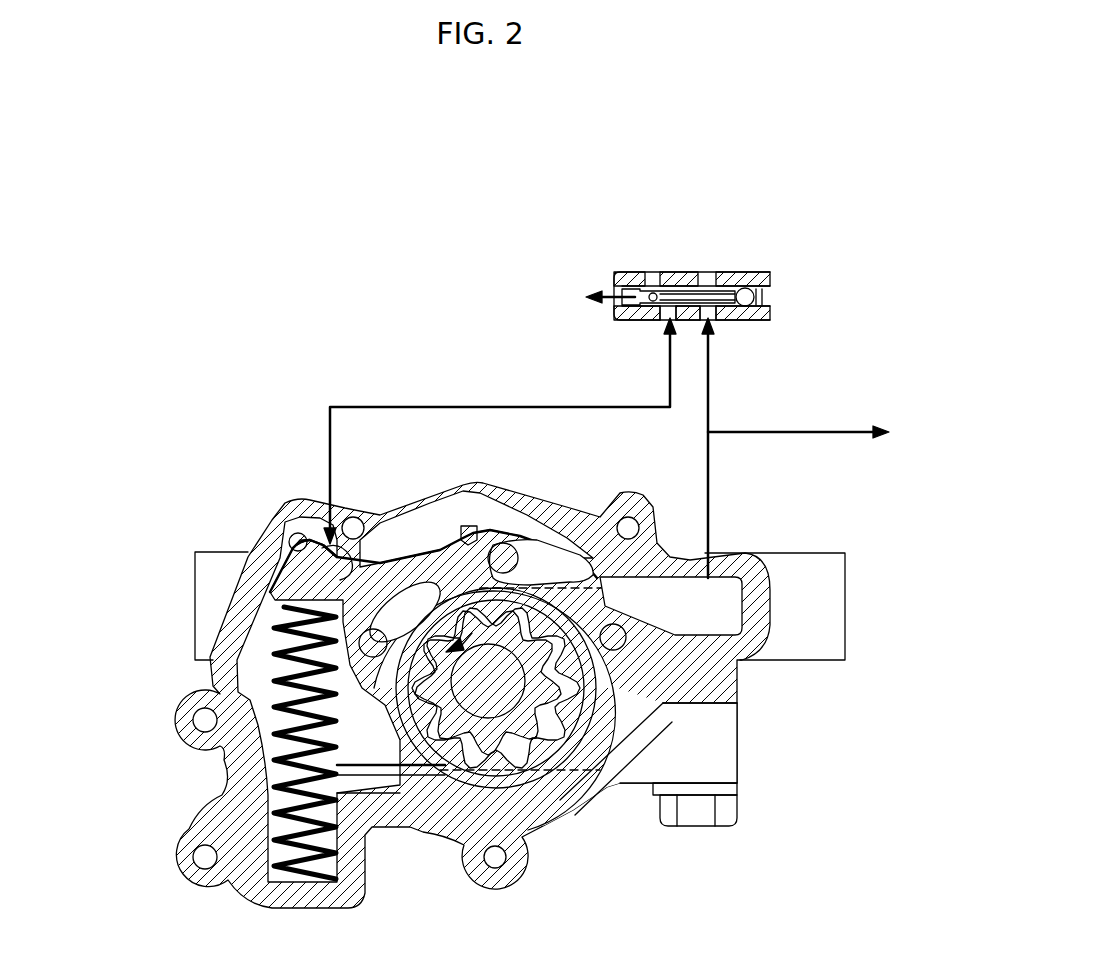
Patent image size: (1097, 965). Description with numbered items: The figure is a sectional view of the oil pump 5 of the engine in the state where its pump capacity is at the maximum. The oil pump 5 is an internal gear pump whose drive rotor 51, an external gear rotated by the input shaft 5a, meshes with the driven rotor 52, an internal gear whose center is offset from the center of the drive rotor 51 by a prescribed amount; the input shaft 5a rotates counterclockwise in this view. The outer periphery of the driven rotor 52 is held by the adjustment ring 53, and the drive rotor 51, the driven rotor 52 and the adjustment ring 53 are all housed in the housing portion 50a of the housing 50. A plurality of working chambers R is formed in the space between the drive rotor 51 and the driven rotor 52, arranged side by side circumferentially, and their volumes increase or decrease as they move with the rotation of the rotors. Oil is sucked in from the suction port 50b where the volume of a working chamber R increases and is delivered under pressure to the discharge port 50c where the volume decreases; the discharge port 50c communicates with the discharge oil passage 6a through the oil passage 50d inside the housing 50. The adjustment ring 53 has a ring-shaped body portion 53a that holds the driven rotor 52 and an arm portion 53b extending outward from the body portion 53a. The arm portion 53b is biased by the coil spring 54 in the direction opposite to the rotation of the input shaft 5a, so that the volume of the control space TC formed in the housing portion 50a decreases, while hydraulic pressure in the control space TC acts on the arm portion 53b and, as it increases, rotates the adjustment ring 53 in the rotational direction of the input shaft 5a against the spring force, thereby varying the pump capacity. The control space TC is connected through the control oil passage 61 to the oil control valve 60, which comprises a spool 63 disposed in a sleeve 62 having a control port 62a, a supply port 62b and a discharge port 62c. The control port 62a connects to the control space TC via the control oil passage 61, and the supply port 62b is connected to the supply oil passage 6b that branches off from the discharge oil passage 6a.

The oil pump 5 is at (235, 421).
The input shaft 5a is at (475, 693).
The discharge oil passage 6a is at (720, 433).
The supply oil passage 6b is at (709, 390).
The housing 50 is at (234, 524).
The housing portion 50a is at (258, 744).
The suction port 50b is at (272, 768).
The discharge port 50c is at (665, 735).
The oil passage 50d is at (752, 556).
The drive rotor 51 is at (445, 772).
The driven rotor 52 is at (510, 792).
The adjustment ring 53 is at (735, 792).
The body portion 53a is at (598, 760).
The arm portion 53b is at (298, 552).
The coil spring 54 is at (250, 721).
The oil control valve 60 is at (757, 261).
The control oil passage 61 is at (395, 406).
The sleeve 62 is at (652, 278).
The control port 62a is at (665, 322).
The supply port 62b is at (718, 322).
The discharge port 62c is at (612, 285).
The spool 63 is at (706, 283).
The control space TC is at (440, 548).
The working chambers R is at (668, 722).